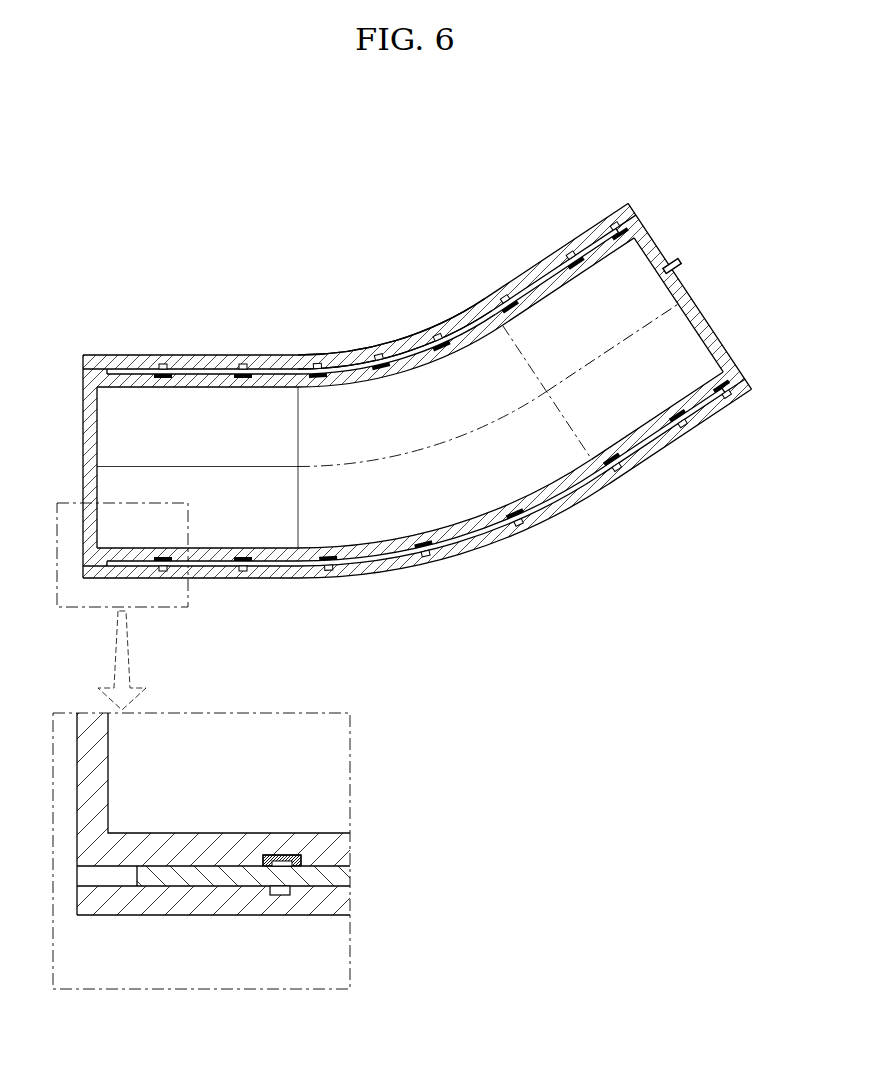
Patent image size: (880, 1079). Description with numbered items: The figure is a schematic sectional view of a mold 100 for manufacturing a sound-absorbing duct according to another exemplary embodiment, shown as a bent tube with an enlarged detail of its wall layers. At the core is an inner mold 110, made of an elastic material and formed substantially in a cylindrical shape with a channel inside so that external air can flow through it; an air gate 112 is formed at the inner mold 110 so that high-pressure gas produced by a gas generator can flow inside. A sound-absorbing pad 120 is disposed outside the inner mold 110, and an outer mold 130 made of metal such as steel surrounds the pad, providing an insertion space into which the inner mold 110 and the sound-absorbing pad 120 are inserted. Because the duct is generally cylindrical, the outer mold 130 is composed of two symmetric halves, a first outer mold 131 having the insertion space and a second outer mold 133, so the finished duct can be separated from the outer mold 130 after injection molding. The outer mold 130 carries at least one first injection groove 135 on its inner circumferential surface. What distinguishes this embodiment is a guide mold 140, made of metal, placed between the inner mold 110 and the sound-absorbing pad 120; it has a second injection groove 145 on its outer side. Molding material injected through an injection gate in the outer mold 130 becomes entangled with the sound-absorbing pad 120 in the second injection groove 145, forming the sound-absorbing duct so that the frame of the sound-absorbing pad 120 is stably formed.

The pipe assembly 100 is at (353, 228).
The inner mold 110 is at (716, 333).
The air gate 112 is at (674, 266).
The sound-absorbing pad 120 is at (703, 426).
The outer mold 130 is at (528, 173).
The first outer mold 131 is at (572, 244).
The second outer mold 133 is at (668, 447).
The first injection groove 135 is at (532, 526).
The guide mold 140 is at (310, 852).
The second injection groove 145 is at (425, 549).